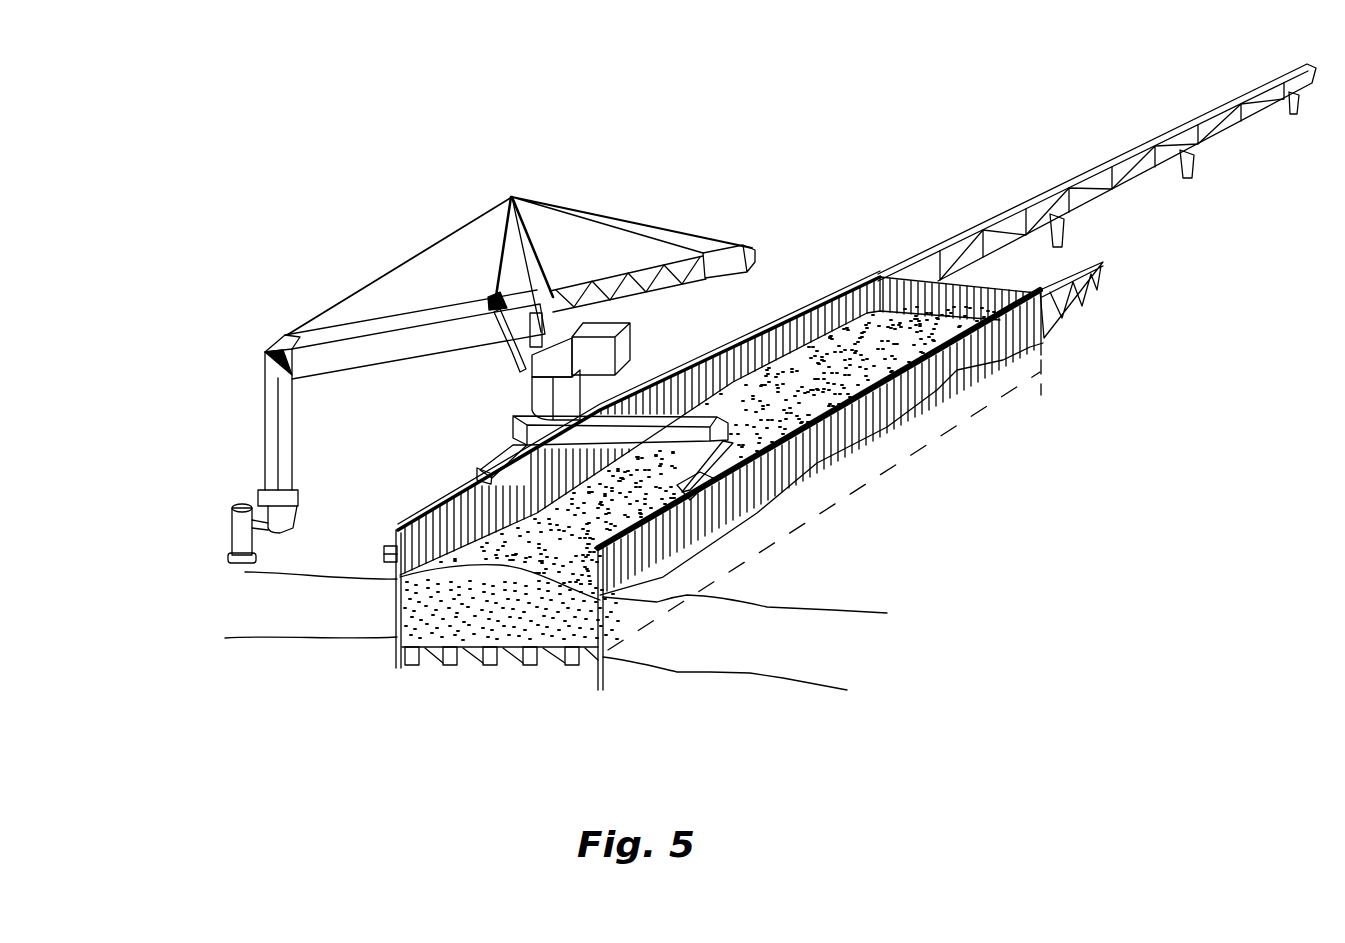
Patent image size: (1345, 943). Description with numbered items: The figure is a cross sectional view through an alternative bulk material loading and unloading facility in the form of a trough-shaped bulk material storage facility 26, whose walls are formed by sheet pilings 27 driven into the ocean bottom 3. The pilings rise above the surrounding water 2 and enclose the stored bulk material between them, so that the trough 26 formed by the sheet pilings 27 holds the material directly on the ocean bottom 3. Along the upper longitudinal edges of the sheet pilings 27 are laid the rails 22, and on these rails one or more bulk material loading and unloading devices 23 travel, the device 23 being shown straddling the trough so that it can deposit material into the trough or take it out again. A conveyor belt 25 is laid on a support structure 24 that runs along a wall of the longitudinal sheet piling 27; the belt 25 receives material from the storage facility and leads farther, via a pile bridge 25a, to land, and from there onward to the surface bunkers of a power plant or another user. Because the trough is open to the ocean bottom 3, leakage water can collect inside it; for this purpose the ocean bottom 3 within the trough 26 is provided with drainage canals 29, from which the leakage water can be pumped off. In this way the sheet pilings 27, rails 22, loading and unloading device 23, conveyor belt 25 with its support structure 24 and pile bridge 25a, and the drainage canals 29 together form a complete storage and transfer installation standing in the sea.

The water surface 2 is at (330, 608).
The ocean bottom 3 is at (680, 672).
The rails 22 is at (657, 512).
The bulk material loading and unloading device 23 is at (272, 428).
The support structure 24 is at (388, 560).
The conveyor belt 25 is at (1215, 102).
The pile bridge 25a is at (1190, 158).
The trough-shaped bulk material storage facility 26 is at (883, 345).
The sheet pilings 27 is at (840, 296).
The drainage canals 29 is at (492, 665).